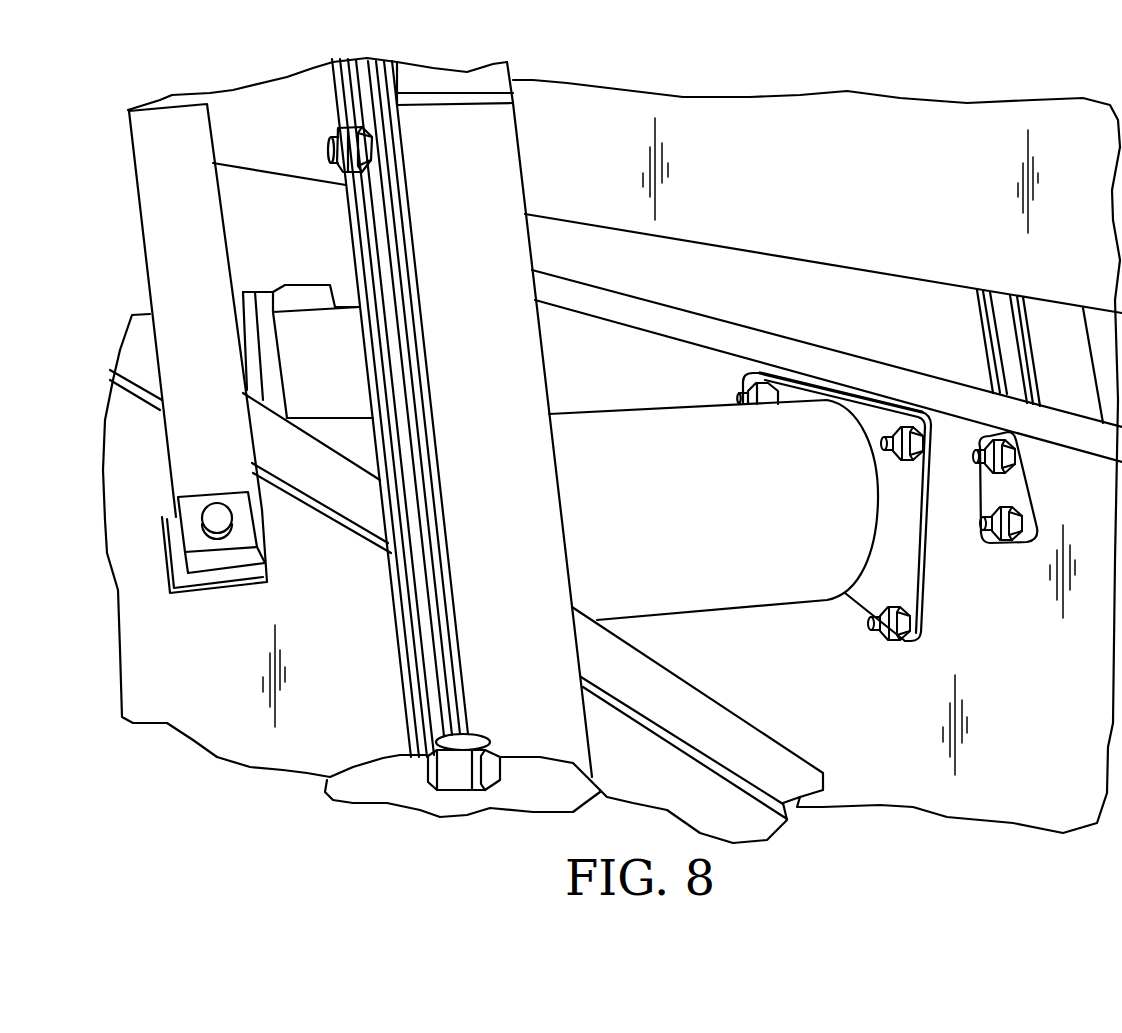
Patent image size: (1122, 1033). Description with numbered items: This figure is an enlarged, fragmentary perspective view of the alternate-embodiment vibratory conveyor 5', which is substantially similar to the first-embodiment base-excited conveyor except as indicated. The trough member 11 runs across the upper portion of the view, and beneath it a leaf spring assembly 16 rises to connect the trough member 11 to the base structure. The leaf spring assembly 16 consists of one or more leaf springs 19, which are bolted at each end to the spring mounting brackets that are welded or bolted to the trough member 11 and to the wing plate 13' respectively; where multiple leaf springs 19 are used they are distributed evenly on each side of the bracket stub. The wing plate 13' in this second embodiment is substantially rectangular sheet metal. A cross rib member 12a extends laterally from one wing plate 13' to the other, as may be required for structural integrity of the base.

The vibratory conveyor 5' is at (592, 436).
The trough member 11 is at (842, 213).
The leaf spring assembly 16 is at (499, 166).
The leaf spring 19 is at (523, 388).
The cross rib member 12a is at (858, 536).
The wing plate 13' is at (331, 565).